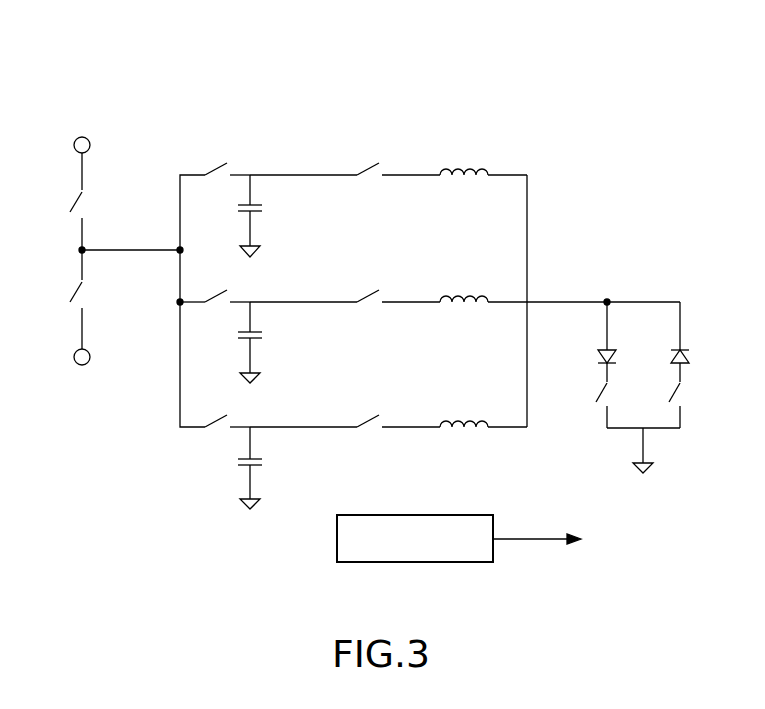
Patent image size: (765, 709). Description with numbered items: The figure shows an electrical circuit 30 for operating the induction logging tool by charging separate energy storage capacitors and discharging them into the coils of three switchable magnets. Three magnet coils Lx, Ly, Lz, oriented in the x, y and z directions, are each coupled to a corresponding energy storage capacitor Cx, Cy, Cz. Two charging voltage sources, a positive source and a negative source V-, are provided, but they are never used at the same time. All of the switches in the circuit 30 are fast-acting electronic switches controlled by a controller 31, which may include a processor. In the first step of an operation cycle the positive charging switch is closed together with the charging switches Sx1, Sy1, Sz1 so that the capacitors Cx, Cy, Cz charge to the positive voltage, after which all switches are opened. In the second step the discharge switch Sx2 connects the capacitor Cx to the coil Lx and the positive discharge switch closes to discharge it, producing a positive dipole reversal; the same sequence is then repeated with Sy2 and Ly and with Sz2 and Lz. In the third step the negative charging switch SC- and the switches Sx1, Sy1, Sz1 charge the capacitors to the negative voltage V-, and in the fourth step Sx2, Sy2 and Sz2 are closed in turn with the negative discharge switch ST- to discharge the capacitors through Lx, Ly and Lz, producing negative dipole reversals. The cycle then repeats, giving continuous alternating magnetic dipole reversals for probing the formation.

The electrical circuit 30 is at (589, 116).
The controller 31 is at (477, 550).
The negative charging voltage source V- is at (99, 357).
The negative charging switch SC- is at (51, 299).
The x-capacitor charging switch Sx1 is at (227, 152).
The x-coil discharge switch Sx2 is at (396, 152).
The y-capacitor charging switch Sy1 is at (227, 279).
The y-coil discharge switch Sy2 is at (396, 279).
The z-capacitor charging switch Sz1 is at (227, 403).
The z-coil discharge switch Sz2 is at (396, 403).
The x-direction switchable-magnet coil Lx is at (483, 153).
The y-direction switchable-magnet coil Ly is at (523, 280).
The z-direction switchable-magnet coil Lz is at (483, 403).
The x energy storage capacitor Cx is at (264, 216).
The y energy storage capacitor Cy is at (264, 342).
The z energy storage capacitor Cz is at (263, 468).
The negative discharge switch ST- is at (697, 365).